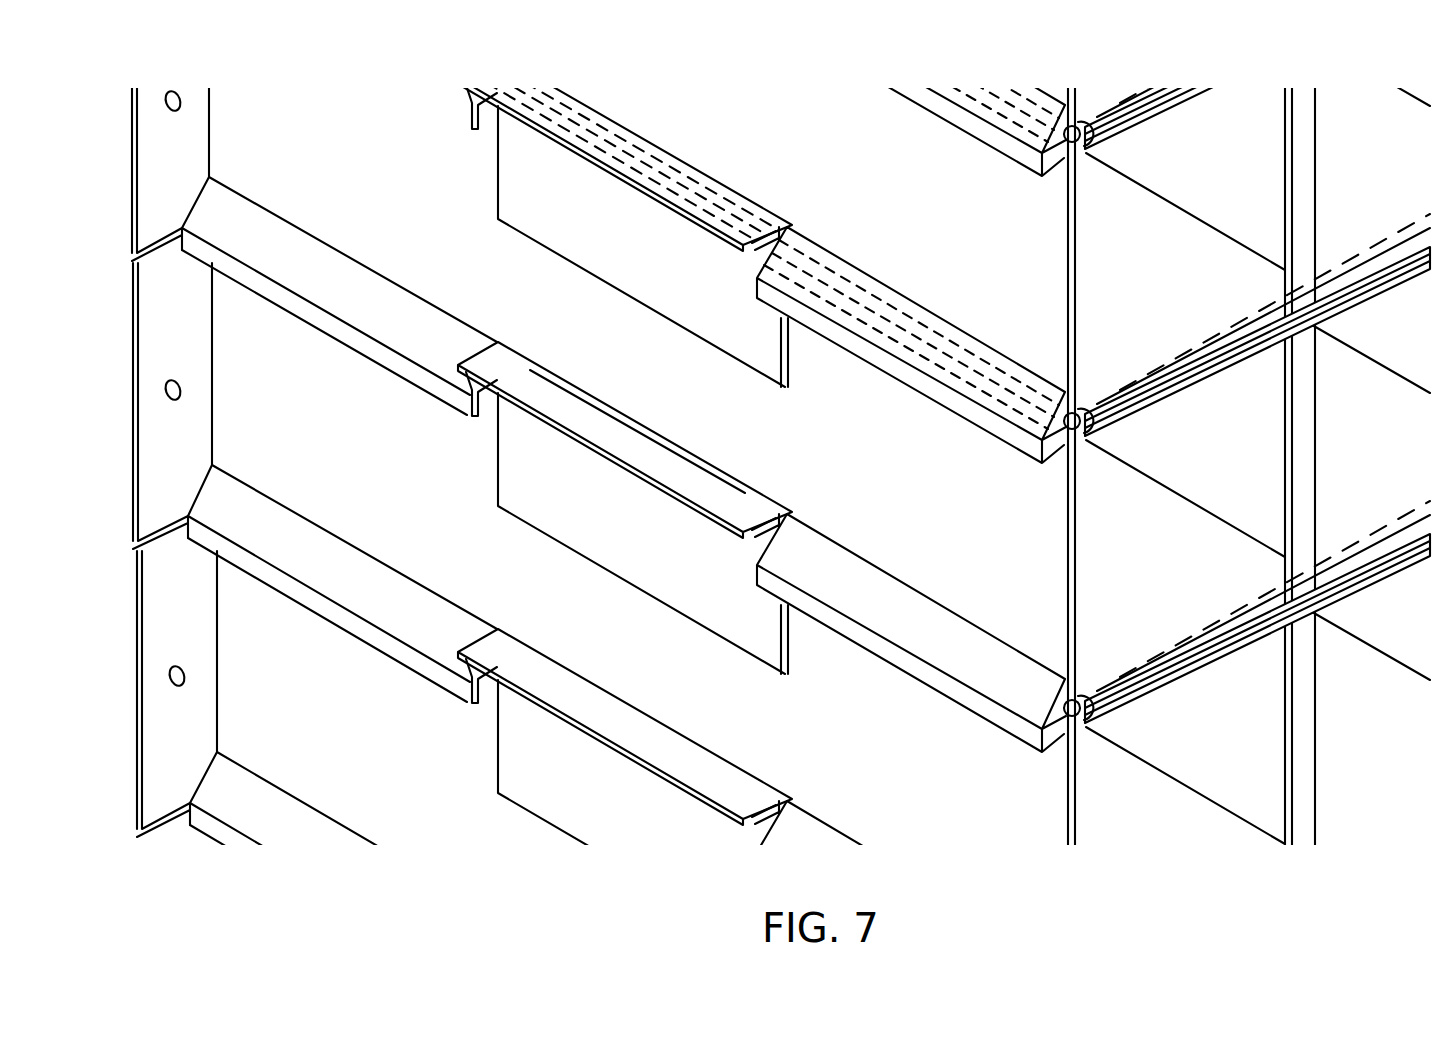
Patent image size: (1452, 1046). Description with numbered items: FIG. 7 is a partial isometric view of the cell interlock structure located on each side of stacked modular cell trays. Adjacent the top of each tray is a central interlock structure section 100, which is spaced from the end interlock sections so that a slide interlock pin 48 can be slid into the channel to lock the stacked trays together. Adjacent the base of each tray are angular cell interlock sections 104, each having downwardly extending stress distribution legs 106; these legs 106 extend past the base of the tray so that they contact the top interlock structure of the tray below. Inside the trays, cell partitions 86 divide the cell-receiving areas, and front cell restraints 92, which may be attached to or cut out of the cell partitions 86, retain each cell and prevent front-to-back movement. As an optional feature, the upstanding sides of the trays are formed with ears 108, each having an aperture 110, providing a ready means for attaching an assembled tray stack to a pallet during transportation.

The slide interlock pin 48 is at (1055, 733).
The cell partition 86 is at (1250, 735).
The front cell restraint 92 is at (1305, 760).
The central interlock structure section 100 is at (683, 752).
The angular cell interlock section 104 is at (940, 363).
The stress distribution leg 106 is at (990, 427).
The ear 108 is at (185, 737).
The aperture 110 is at (186, 677).